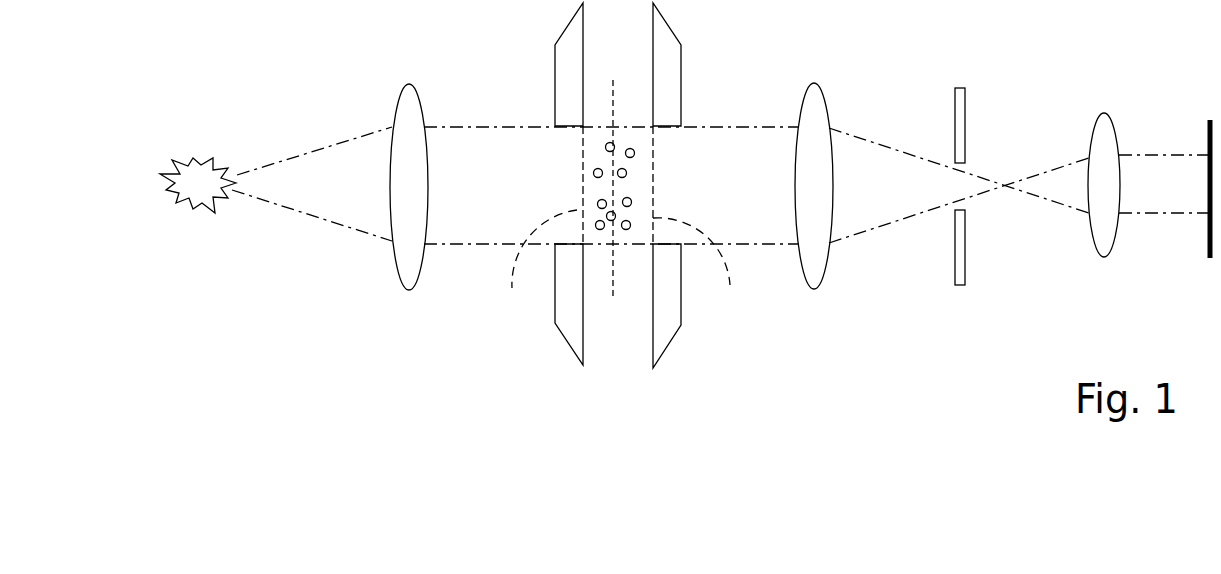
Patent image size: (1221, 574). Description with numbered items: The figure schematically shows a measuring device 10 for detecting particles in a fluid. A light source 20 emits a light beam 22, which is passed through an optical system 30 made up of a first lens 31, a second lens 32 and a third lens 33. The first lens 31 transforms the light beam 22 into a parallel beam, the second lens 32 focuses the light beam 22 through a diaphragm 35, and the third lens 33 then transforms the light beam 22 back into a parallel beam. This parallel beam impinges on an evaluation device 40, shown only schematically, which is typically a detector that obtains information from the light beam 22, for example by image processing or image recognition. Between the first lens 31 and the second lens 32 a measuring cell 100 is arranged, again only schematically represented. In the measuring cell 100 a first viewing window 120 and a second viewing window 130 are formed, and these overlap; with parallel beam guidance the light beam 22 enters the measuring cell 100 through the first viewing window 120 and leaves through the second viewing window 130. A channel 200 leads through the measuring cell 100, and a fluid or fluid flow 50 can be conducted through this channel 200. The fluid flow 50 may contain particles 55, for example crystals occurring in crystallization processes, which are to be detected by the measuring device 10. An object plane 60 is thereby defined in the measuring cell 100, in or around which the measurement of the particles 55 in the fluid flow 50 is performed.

The measuring device 10 is at (311, 381).
The light source 20 is at (191, 208).
The light beam 22 is at (318, 165).
The optical system 30 is at (367, 293).
The first lens 31 is at (408, 96).
The second lens 32 is at (810, 100).
The third lens 33 is at (1103, 115).
The diaphragm 35 is at (960, 88).
The evaluation device 40 is at (1207, 133).
The fluid flow 50 is at (643, 300).
The particles 55 is at (635, 153).
The object plane 60 is at (612, 97).
The measuring cell 100 is at (557, 368).
The first viewing window 120 is at (534, 265).
The second viewing window 130 is at (708, 267).
The channel 200 is at (628, 356).